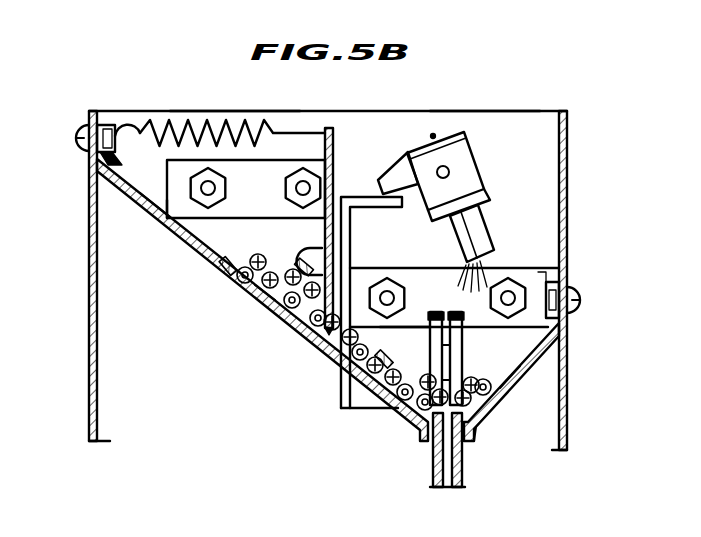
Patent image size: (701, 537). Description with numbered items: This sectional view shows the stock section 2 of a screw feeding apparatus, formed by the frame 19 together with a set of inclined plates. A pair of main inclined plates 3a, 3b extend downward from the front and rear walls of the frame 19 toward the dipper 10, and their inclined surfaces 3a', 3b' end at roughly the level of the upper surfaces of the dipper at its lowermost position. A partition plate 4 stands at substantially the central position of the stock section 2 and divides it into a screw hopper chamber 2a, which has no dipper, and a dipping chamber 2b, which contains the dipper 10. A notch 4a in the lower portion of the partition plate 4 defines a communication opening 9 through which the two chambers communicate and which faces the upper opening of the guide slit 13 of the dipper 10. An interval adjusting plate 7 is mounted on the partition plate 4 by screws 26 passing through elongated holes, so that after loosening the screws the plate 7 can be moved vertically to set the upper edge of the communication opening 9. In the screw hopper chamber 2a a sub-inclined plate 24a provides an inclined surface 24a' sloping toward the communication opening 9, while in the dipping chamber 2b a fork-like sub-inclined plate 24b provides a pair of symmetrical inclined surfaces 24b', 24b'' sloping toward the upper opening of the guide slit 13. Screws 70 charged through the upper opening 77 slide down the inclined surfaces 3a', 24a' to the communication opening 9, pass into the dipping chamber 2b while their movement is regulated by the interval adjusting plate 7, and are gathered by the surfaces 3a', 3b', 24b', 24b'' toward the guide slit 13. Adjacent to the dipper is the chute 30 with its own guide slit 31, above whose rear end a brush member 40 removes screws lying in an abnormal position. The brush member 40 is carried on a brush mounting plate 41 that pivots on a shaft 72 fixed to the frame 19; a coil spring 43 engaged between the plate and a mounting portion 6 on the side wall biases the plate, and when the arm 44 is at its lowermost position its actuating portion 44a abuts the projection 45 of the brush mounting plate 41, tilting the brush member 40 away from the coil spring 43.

The stock section 2 is at (524, 102).
The screw hopper chamber 2a is at (215, 115).
The dipping chamber 2b is at (485, 125).
The main inclined plate 3a is at (234, 300).
The inclined surface 3a' is at (135, 225).
The main inclined plate 3b is at (540, 382).
The inclined surface 3b' is at (521, 396).
The partition plate 4 is at (331, 128).
The notch 4a is at (334, 306).
The mounting portion 6 is at (107, 126).
The interval adjusting plate 7 is at (322, 222).
The communication opening 9 is at (322, 344).
The dipper 10 is at (432, 466).
The guide slit 13 is at (456, 462).
The frame 19 is at (97, 348).
The sub-inclined plate 24a is at (246, 142).
The inclined surface 24a' is at (177, 246).
The sub-inclined plate 24b is at (487, 282).
The inclined surface 24b' is at (418, 290).
The inclined surface 24b'' is at (509, 431).
The screws 26 is at (308, 256).
The chute 30 is at (432, 318).
The guide slit 31 is at (440, 348).
The brush member 40 is at (486, 256).
The brush mounting plate 41 is at (478, 186).
The coil spring 43 is at (187, 126).
The arm 44 is at (345, 406).
The actuating portion 44a is at (360, 197).
The projection 45 is at (394, 160).
The screws 70 is at (262, 287).
The shaft 72 is at (449, 168).
The upper opening 77 is at (134, 90).